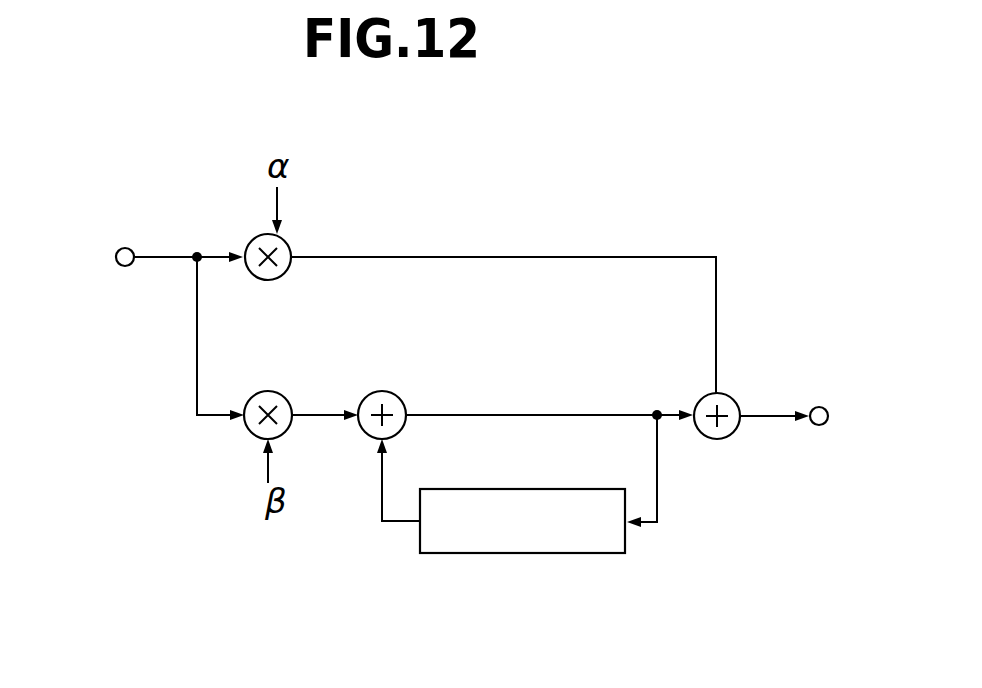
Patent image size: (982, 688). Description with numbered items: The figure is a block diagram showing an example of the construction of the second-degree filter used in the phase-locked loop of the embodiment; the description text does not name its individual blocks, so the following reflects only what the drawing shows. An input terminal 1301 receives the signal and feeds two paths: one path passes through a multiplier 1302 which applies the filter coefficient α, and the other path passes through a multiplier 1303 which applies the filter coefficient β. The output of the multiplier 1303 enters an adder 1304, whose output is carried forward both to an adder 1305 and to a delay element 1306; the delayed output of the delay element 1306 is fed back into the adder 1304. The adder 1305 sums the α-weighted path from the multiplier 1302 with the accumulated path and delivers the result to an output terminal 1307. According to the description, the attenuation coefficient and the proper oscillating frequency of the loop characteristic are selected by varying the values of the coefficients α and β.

The input terminal 1301 is at (125, 247).
The multiplier (coefficient alpha) 1302 is at (293, 240).
The multiplier (coefficient beta) 1303 is at (268, 390).
The adder 1304 is at (382, 390).
The adder 1305 is at (715, 440).
The delay element 1306 is at (523, 554).
The output terminal 1307 is at (818, 407).